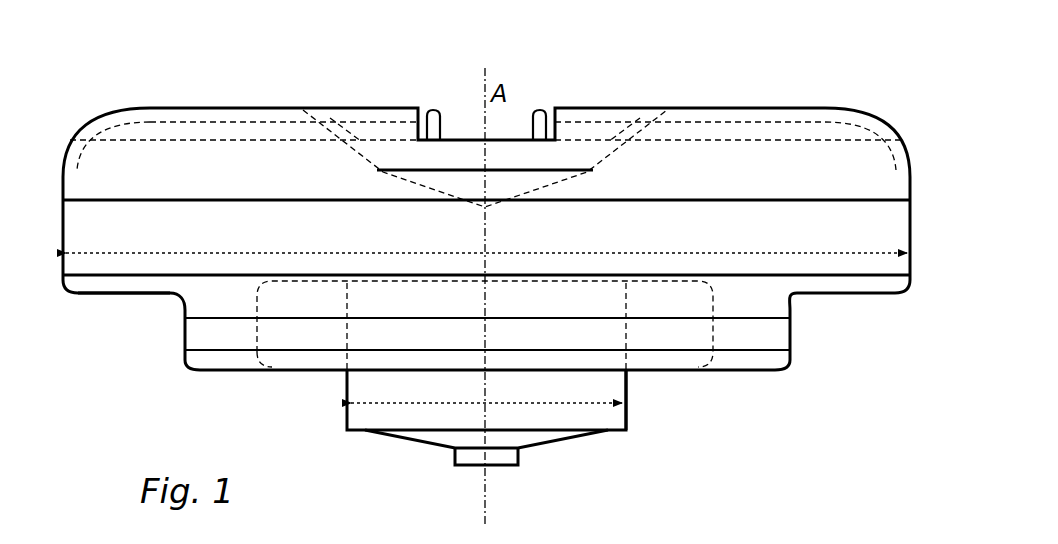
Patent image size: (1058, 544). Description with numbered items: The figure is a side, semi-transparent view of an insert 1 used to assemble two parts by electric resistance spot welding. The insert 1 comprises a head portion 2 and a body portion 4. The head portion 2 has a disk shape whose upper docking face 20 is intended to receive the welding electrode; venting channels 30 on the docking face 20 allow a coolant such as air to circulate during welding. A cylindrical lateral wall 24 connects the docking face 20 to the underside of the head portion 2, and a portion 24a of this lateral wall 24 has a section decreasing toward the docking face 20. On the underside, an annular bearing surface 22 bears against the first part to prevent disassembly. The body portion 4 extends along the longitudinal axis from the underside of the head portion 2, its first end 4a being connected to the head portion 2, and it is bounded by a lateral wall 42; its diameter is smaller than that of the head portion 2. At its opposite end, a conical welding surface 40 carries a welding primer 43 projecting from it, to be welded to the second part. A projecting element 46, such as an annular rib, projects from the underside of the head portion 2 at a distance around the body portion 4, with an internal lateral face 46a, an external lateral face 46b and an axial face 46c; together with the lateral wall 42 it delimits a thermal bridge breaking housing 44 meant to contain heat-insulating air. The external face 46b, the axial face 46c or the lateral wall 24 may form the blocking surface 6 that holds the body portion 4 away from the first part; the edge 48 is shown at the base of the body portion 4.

The insert 1 is at (823, 60).
The head portion 2 is at (688, 175).
The docking face 20 is at (592, 108).
The venting channel 30 is at (240, 138).
The lateral wall 24 is at (913, 228).
The portion with decreasing section 24a is at (898, 151).
The bearing surface 22 is at (108, 298).
The blocking surface 6 is at (543, 361).
The projecting element 46 is at (218, 336).
The internal lateral face 46a is at (668, 328).
The external lateral face 46b is at (793, 331).
The axial face 46c is at (762, 372).
The thermal bridge breaking housing 44 is at (307, 330).
The body portion 4 is at (585, 412).
The first end 4a is at (628, 312).
The lateral wall 42 is at (345, 405).
The stem bottom edge 48 is at (630, 425).
The welding surface 40 is at (403, 449).
The welding primer 43 is at (470, 470).